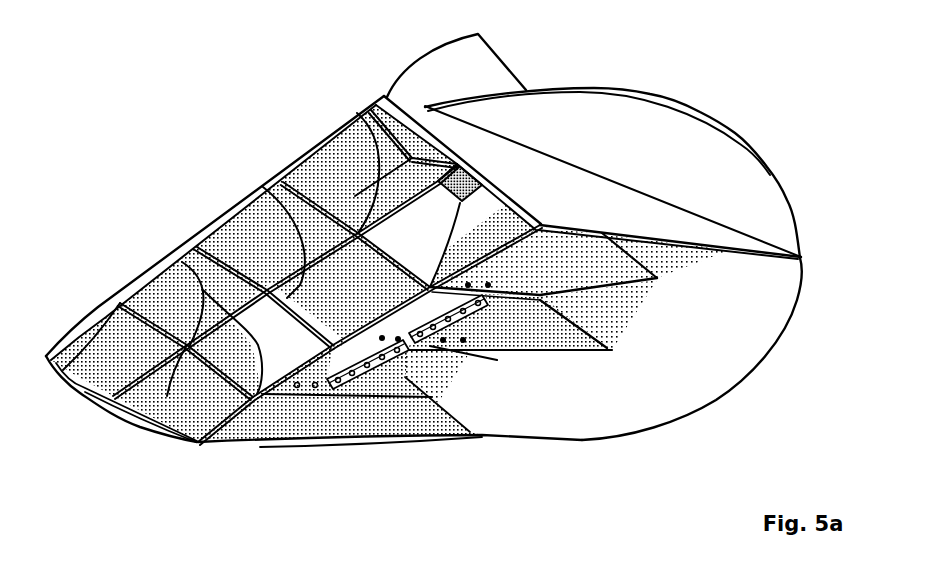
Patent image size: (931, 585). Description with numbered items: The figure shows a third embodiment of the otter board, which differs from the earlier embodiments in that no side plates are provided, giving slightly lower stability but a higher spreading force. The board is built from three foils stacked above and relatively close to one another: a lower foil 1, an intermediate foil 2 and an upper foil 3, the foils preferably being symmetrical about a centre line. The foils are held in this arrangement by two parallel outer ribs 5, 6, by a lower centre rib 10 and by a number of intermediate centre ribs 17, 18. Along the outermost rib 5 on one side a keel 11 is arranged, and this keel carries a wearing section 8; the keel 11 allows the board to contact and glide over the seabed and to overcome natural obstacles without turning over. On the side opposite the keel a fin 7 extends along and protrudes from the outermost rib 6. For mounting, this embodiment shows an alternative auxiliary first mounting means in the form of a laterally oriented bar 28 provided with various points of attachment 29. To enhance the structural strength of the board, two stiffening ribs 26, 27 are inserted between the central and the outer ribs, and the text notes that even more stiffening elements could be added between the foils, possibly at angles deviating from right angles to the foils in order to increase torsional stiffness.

The lower foil 1 is at (750, 305).
The intermediate foil 2 is at (323, 176).
The upper foil 3 is at (380, 98).
The outer rib 5 is at (167, 396).
The outer rib 6 is at (463, 72).
The fin 7 is at (590, 117).
The wearing section 8 is at (83, 400).
The lower centre rib 10 is at (583, 344).
The keel 11 is at (327, 440).
The intermediate centre rib 17 is at (263, 187).
The intermediate centre rib 18 is at (267, 243).
The stiffening rib 26 is at (312, 152).
The stiffening rib 27 is at (203, 290).
The laterally oriented bar 28 is at (420, 378).
The points of attachment 29 is at (485, 298).